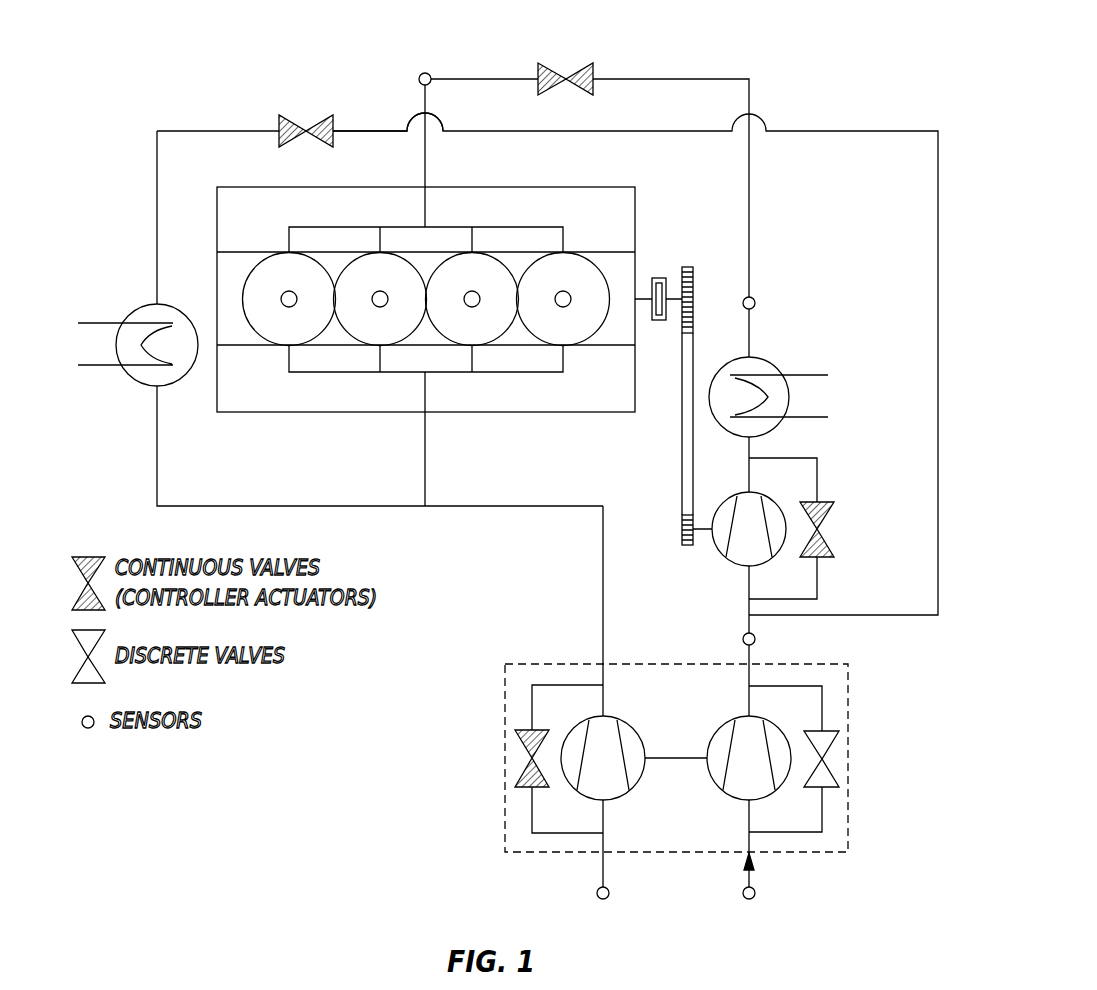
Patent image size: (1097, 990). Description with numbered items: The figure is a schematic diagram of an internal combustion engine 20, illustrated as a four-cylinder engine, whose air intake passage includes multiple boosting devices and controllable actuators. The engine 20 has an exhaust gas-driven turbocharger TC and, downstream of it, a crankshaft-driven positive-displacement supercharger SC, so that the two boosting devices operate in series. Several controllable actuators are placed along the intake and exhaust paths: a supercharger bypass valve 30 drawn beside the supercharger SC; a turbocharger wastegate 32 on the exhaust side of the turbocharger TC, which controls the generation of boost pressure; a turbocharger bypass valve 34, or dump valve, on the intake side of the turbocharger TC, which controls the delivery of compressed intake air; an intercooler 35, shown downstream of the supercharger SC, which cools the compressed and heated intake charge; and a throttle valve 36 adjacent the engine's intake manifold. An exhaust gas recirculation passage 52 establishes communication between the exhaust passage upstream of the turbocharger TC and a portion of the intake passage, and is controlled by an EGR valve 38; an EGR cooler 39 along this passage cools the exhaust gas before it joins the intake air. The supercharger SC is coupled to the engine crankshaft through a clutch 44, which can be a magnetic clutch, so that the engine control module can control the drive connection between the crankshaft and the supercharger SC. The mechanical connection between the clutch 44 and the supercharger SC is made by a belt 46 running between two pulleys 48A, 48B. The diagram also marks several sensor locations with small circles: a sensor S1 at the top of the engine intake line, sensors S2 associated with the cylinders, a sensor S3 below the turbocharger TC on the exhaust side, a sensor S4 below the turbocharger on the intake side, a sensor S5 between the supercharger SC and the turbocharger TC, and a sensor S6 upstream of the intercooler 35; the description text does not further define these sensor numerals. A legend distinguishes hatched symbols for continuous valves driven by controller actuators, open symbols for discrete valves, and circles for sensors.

The internal combustion engine 20 is at (131, 91).
The EGR valve 38 is at (279, 124).
The EGR passage 52 is at (386, 130).
The sensor S1 is at (420, 75).
The throttle valve 36 is at (593, 72).
The EGR cooler 39 is at (142, 306).
The cylinder sensors S2 is at (516, 443).
The clutch 44 is at (665, 272).
The pulley 48A is at (694, 288).
The belt 46 is at (682, 435).
The pulley 48B is at (681, 535).
The sensor S6 is at (756, 301).
The intercooler 35 is at (777, 365).
The supercharger SC is at (722, 550).
The supercharger bypass valve 30 is at (823, 503).
The sensor S5 is at (756, 636).
The turbocharger TC is at (505, 690).
The turbocharger wastegate 32 is at (521, 788).
The turbocharger bypass valve 34 is at (827, 731).
The sensor S3 is at (597, 893).
The sensor S4 is at (756, 893).